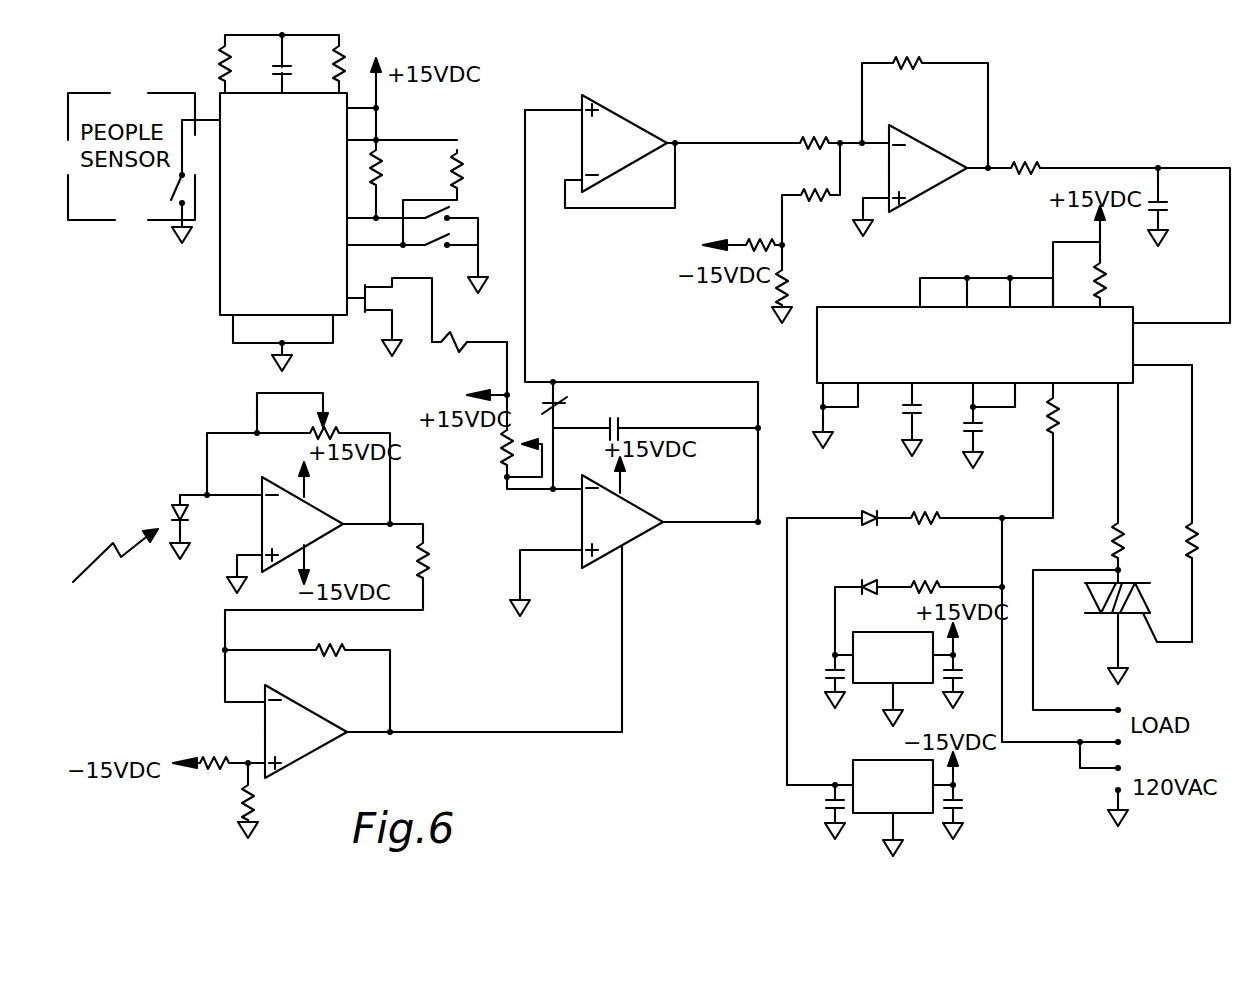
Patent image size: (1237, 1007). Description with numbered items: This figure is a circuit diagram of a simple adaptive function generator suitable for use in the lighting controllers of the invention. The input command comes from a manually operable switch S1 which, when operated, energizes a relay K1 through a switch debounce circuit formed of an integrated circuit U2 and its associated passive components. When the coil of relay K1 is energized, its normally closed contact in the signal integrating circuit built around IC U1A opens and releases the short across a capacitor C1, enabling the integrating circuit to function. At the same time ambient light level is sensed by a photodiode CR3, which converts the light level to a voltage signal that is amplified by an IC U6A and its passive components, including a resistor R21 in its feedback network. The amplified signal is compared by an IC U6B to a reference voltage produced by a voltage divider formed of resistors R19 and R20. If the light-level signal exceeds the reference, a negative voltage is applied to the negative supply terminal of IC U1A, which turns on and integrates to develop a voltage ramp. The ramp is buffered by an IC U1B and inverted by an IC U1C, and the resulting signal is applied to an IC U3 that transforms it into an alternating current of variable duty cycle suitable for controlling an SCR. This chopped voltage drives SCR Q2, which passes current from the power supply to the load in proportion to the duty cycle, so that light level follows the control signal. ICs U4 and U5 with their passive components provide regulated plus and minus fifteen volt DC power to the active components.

The integrated circuit U2 is at (283, 204).
The switch S1 is at (177, 181).
The relay K1 is at (499, 411).
The capacitor C1 is at (655, 416).
The integrated circuit U1A is at (622, 521).
The integrated circuit U1B is at (624, 143).
The integrated circuit U1C is at (928, 168).
The integrated circuit U3 is at (975, 345).
The integrated circuit U4 is at (893, 786).
The integrated circuit U5 is at (893, 657).
The SCR Q2 is at (1127, 625).
The integrated circuit U6A is at (302, 524).
The integrated circuit U6B is at (306, 731).
The photodiode CR3 is at (206, 519).
The resistor R21 is at (316, 408).
The resistor R19 is at (219, 744).
The resistor R20 is at (273, 792).